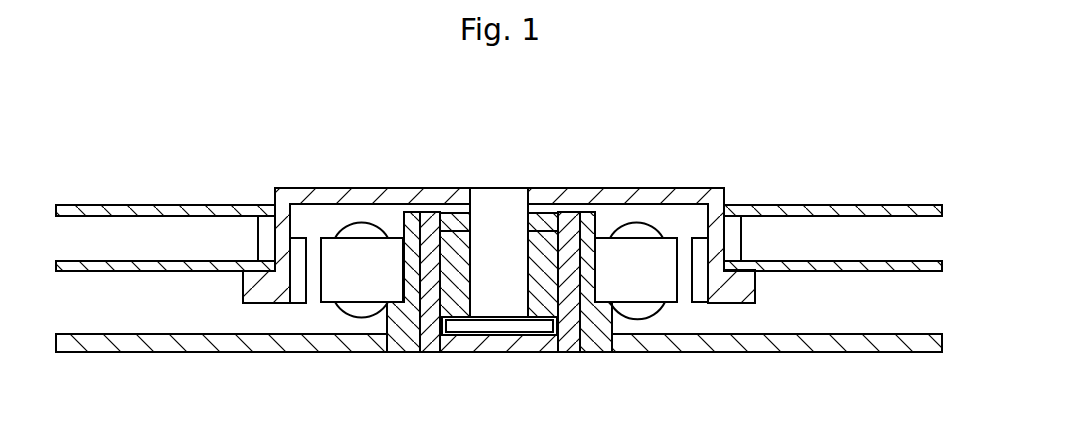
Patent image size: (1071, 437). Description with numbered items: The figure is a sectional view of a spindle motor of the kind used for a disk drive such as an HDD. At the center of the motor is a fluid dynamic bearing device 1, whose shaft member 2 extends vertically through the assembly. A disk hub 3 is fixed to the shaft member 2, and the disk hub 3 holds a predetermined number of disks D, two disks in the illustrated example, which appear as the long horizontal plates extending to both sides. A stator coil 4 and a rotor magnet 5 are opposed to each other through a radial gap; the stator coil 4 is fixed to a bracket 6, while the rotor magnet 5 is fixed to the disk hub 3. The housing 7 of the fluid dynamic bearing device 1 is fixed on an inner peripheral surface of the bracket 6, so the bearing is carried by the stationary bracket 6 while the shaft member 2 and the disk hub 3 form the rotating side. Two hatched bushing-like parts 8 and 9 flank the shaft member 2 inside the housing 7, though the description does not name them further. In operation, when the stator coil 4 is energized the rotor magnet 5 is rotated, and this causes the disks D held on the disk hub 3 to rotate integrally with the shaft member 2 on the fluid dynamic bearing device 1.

The fluid dynamic bearing device 1 is at (499, 256).
The shaft member 2 is at (508, 184).
The disk hub 3 is at (675, 198).
The stator coil 4 is at (637, 313).
The rotor magnet 5 is at (702, 296).
The bracket 6 is at (593, 334).
The housing 7 is at (430, 233).
The bushing 8 is at (549, 232).
The bushing 9 is at (452, 225).
The disks D is at (846, 204).